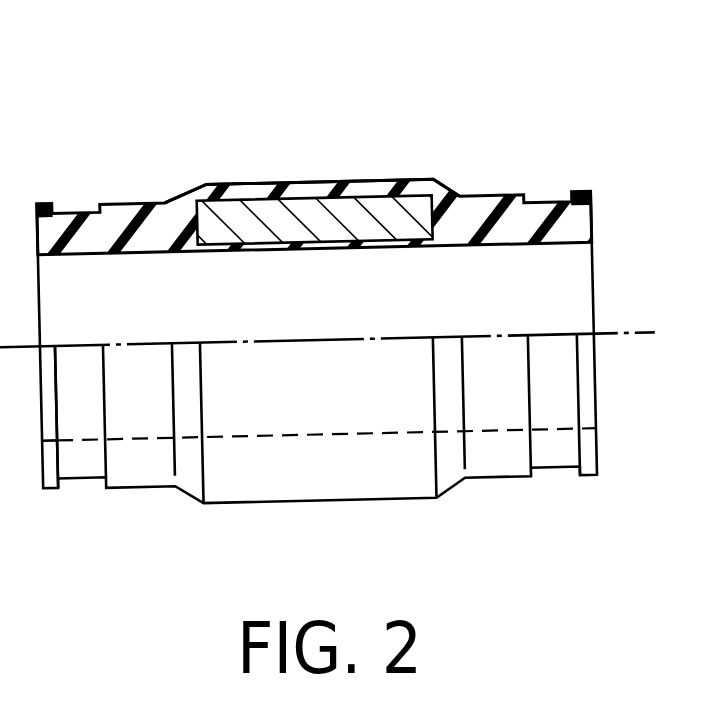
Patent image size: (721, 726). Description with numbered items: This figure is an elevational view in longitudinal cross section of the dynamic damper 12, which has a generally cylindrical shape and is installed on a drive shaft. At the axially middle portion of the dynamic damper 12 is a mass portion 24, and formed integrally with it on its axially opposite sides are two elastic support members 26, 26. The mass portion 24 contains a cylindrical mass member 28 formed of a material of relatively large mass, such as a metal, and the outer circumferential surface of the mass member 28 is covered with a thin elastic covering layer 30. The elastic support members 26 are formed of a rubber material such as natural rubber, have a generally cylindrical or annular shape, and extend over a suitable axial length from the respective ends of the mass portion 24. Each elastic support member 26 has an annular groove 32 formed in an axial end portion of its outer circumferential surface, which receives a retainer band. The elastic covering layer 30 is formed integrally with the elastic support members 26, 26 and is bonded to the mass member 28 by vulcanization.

The dynamic damper 12 is at (467, 122).
The mass portion 24 is at (307, 178).
The elastic support members 26 is at (151, 198).
The mass member 28 is at (226, 212).
The elastic covering layer 30 is at (392, 192).
The annular groove 32 is at (55, 466).